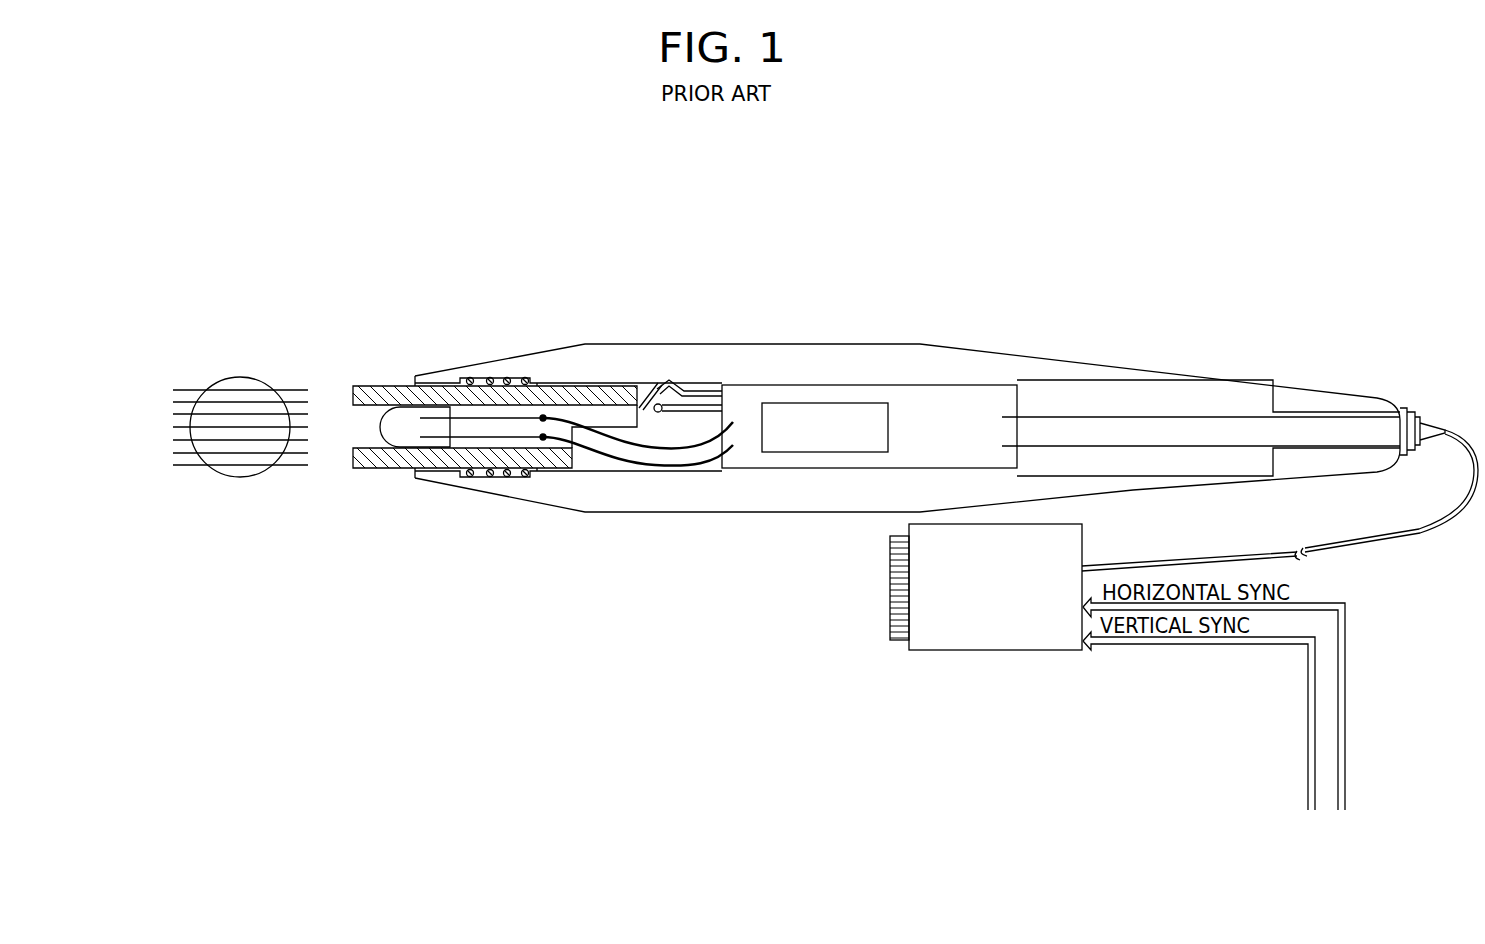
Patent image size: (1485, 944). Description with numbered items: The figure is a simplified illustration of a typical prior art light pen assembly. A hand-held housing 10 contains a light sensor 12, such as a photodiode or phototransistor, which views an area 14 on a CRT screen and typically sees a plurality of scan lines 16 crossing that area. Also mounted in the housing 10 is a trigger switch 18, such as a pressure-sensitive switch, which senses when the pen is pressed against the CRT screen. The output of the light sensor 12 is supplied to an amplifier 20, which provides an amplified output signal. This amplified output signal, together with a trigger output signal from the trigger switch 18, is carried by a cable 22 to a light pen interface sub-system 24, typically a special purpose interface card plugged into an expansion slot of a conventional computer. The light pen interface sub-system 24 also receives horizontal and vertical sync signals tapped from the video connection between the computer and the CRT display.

The hand-held housing 10 is at (702, 344).
The light sensor 12 is at (393, 409).
The area 14 is at (236, 378).
The scan lines 16 is at (302, 392).
The trigger switch 18 is at (653, 382).
The amplifier 20 is at (880, 403).
The cable 22 is at (1360, 538).
The light pen interface sub-system 24 is at (1006, 647).